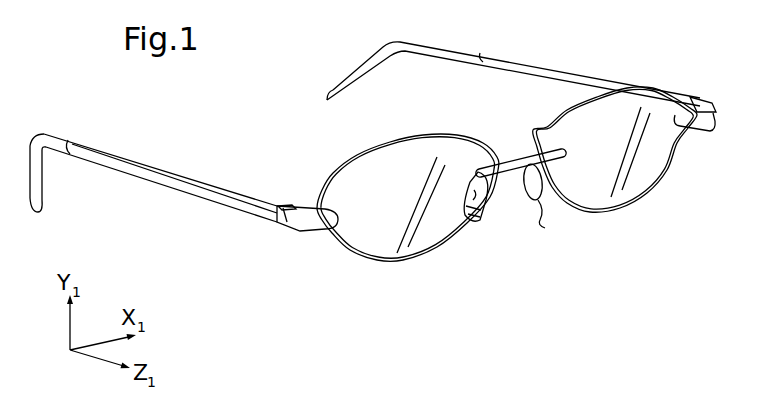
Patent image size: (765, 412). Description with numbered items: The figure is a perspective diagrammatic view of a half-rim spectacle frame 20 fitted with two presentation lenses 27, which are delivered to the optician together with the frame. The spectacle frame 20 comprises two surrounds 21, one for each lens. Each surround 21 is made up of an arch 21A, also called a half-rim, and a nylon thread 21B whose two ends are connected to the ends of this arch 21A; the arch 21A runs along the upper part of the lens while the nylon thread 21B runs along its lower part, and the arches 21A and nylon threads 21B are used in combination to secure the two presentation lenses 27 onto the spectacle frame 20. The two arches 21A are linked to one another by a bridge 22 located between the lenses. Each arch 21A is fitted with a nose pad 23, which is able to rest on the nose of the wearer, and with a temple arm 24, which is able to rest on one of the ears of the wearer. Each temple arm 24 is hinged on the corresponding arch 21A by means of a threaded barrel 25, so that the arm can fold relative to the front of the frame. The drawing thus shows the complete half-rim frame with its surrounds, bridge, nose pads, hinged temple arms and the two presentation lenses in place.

The half-rim spectacle frame 20 is at (262, 272).
The surround 21 is at (483, 153).
The arch 21A is at (394, 147).
The nylon thread 21B is at (318, 235).
The bridge 22 is at (533, 140).
The nose pad 23 is at (458, 214).
The temple arm 24 is at (217, 197).
The threaded barrel 25 is at (283, 207).
The presentation lens 27 is at (430, 233).